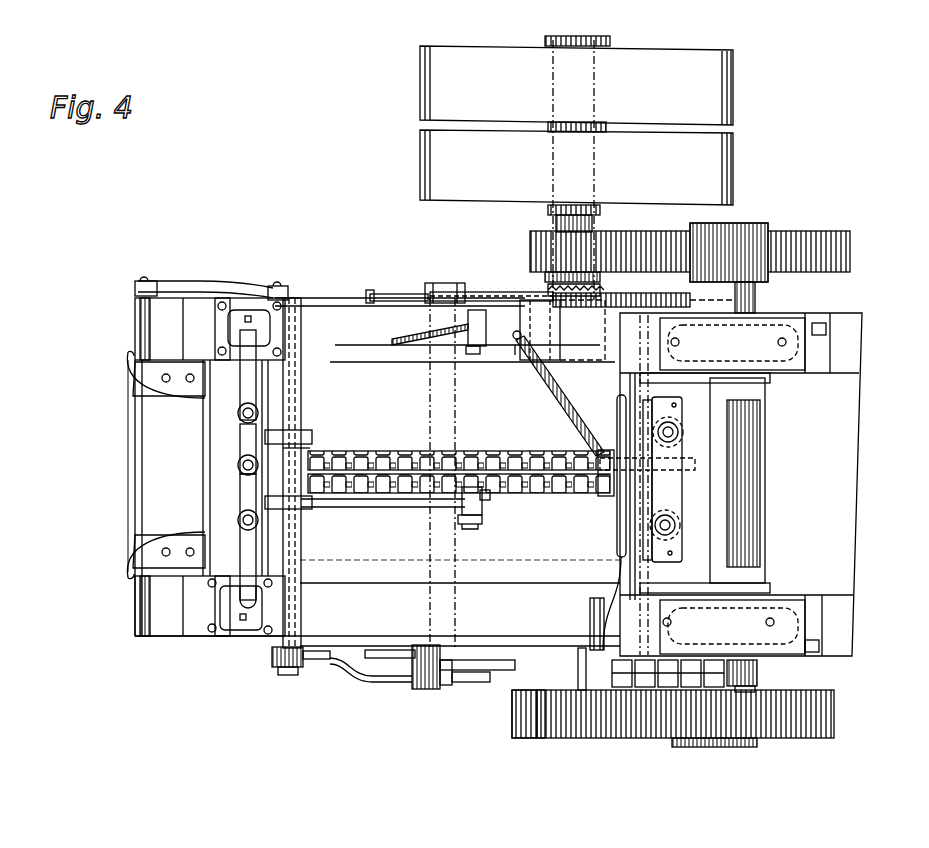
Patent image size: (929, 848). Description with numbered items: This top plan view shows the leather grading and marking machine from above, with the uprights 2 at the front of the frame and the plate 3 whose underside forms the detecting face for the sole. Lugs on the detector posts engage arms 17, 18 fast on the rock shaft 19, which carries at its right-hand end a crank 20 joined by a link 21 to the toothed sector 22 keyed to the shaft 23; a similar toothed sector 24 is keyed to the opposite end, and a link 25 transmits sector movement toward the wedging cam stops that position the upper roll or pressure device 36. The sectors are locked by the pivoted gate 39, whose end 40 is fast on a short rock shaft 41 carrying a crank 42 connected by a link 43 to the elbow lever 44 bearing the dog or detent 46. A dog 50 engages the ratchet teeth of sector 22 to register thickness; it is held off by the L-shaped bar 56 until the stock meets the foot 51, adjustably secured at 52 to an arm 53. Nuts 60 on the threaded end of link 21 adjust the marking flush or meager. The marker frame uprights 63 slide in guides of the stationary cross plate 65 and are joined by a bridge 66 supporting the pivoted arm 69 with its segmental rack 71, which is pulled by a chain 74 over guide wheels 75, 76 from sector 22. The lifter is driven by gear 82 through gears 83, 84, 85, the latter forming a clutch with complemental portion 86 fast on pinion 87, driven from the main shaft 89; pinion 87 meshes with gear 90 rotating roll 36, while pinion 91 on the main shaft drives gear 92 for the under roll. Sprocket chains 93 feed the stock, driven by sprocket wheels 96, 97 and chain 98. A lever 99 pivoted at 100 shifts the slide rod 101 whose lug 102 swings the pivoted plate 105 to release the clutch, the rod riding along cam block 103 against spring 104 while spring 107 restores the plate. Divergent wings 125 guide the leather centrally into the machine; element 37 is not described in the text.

The uprights 2 is at (235, 625).
The plate 3 is at (240, 515).
The arm or lever 17 is at (240, 498).
The arm or lever 18 is at (240, 430).
The rock shaft 19 is at (301, 403).
The crank 20 is at (272, 660).
The link 21 is at (360, 680).
The toothed sector 22 is at (455, 670).
The shaft 23 is at (430, 566).
The toothed sector 24 is at (370, 290).
The link 25 is at (541, 700).
The adjusting roll or pressure device 36 is at (765, 458).
The cross bar 37 is at (760, 470).
The pivoted gate 39 is at (203, 492).
The end of gate 40 is at (128, 362).
The short rock shaft 41 is at (160, 323).
The crank 42 is at (135, 288).
The link 43 is at (200, 281).
The elbow lever 44 is at (280, 286).
The dog or detent 46 is at (445, 283).
The dog 50 is at (478, 682).
The foot 51 is at (482, 508).
The adjustable securing point 52 is at (468, 529).
The arm 53 is at (346, 509).
The L-shaped bar 56 is at (388, 650).
The nuts 60 is at (420, 689).
The uprights 63 is at (678, 432).
The stationary cross plate 65 is at (700, 520).
The bridge 66 is at (680, 513).
The pivoted arm 69 is at (617, 500).
The segmental rack 71 is at (490, 494).
The chain 74 is at (605, 550).
The guide wheel 75 is at (590, 620).
The guide wheel 76 is at (578, 672).
The gear 82 is at (692, 300).
The gear 83 is at (545, 286).
The gear 84 is at (585, 332).
The ratchet gear or clutch 85 is at (602, 290).
The complemental clutch portion 86 is at (525, 294).
The pinion 87 is at (530, 246).
The main shaft 89 is at (545, 215).
The gear 90 is at (850, 250).
The pinion 91 is at (514, 710).
The gear 92 is at (792, 725).
The sprocket chains 93 is at (362, 450).
The sprocket wheel 96 is at (625, 690).
The sprocket wheel 97 is at (757, 666).
The chain 98 is at (755, 688).
The lever 99 is at (598, 455).
The pivot 100 is at (617, 388).
The slide rod 101 is at (515, 362).
The projecting lug 102 is at (622, 340).
The cam block 103 is at (470, 362).
The spring 104 is at (405, 338).
The pivoted plate 105 is at (520, 323).
The spring 107 is at (556, 400).
The divergent wings 125 is at (145, 390).